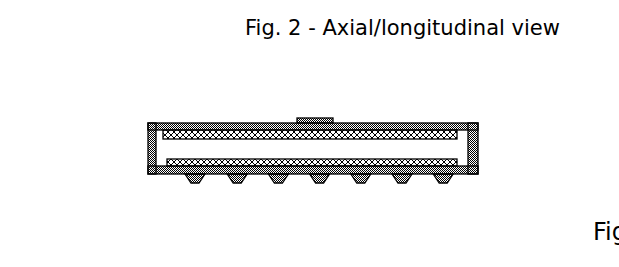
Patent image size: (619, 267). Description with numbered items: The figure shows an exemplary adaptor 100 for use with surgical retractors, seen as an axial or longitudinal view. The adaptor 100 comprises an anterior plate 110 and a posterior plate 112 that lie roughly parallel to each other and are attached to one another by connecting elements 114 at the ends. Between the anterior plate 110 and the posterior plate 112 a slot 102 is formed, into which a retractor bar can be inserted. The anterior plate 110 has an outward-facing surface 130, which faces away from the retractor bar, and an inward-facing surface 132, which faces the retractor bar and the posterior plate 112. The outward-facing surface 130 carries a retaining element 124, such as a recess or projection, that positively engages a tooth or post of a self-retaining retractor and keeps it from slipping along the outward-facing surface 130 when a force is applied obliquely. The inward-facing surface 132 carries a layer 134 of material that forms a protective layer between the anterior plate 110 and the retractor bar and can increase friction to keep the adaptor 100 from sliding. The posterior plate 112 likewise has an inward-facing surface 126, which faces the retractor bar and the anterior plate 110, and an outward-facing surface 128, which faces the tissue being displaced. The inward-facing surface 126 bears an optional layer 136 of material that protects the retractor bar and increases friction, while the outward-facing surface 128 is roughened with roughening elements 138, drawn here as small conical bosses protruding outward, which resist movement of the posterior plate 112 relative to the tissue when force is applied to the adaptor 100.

The adaptor 100 is at (339, 146).
The slot 102 is at (222, 147).
The anterior plate 110 is at (318, 142).
The posterior plate 112 is at (383, 176).
The connecting elements 114 is at (478, 162).
The retaining elements 124 is at (333, 122).
The inward-facing surface 126 is at (427, 162).
The outward-facing surface 128 is at (258, 178).
The outward-facing surface 130 is at (248, 123).
The inward-facing surface 132 is at (447, 165).
The layer 134 is at (388, 136).
The layer 136 is at (175, 170).
The roughening elements 138 is at (318, 181).